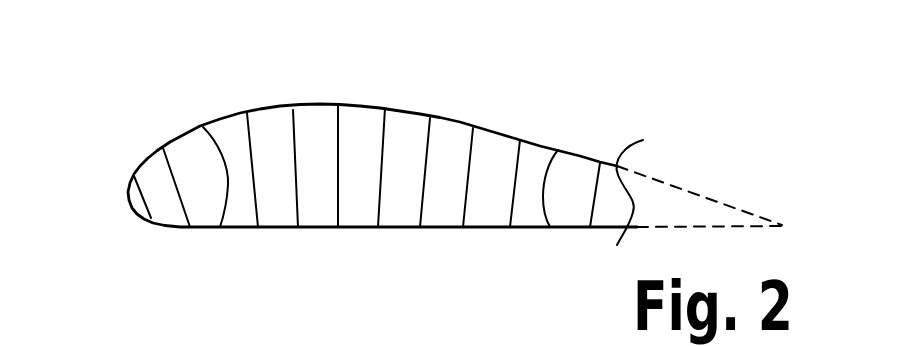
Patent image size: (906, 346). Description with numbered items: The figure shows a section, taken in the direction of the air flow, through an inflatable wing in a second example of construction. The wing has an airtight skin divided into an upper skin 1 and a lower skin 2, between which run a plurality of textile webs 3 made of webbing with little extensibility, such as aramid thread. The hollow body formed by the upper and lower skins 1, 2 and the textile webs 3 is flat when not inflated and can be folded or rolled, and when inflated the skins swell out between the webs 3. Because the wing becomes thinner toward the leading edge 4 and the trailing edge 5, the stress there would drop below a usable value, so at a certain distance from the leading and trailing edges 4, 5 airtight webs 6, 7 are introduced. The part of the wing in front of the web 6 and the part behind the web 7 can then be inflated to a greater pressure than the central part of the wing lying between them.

The upper skin 1 is at (307, 103).
The lower skin 2 is at (383, 228).
The textile webs 3 is at (297, 205).
The leading edge 4 is at (128, 193).
The trailing edge 5 is at (713, 217).
The airtight web 6 is at (218, 150).
The airtight web 7 is at (545, 183).